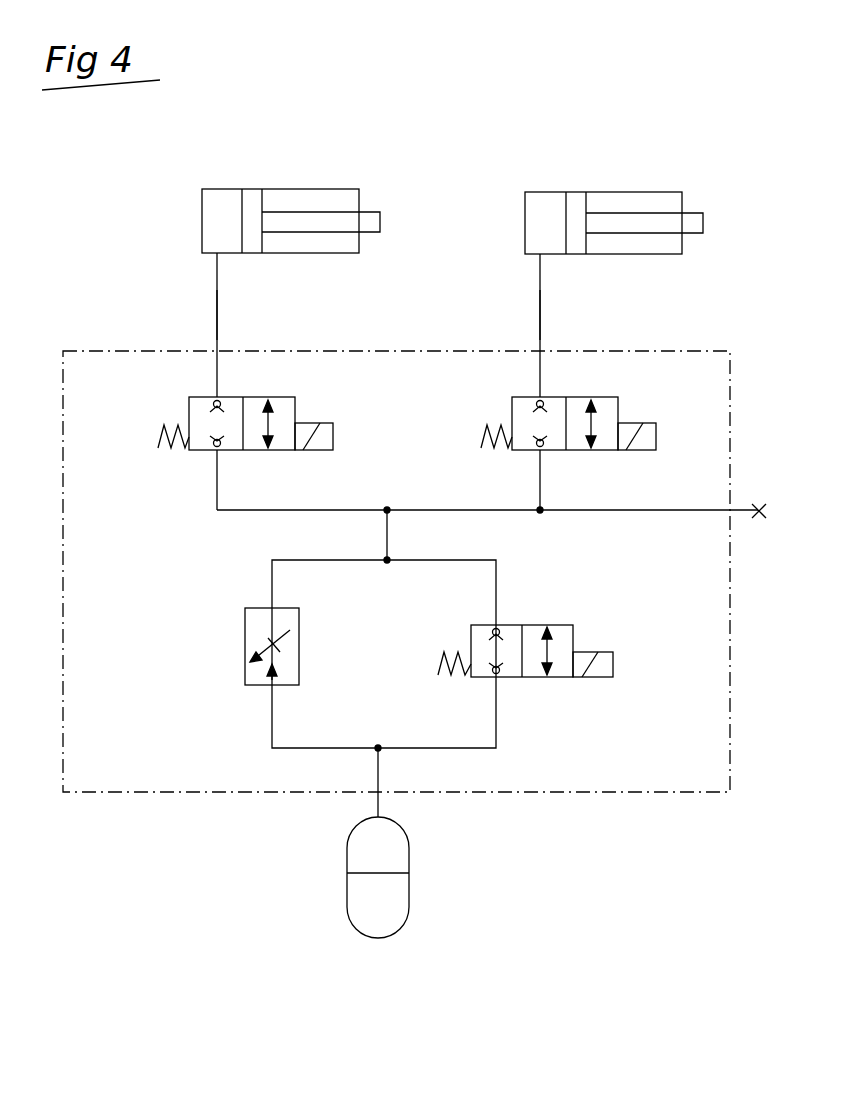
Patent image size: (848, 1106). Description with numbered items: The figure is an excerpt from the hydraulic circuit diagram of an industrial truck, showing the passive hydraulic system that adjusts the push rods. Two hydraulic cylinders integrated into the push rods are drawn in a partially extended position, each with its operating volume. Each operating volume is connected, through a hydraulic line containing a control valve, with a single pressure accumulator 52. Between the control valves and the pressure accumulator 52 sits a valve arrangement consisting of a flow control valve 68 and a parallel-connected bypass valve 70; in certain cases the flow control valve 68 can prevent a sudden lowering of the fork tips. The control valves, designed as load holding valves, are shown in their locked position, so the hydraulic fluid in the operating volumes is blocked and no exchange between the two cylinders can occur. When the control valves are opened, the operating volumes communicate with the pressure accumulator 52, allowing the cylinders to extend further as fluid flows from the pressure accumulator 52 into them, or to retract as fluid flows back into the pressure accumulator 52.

The pressure accumulator 52 is at (410, 890).
The flow control valve 68 is at (300, 640).
The bypass valve 70 is at (540, 625).